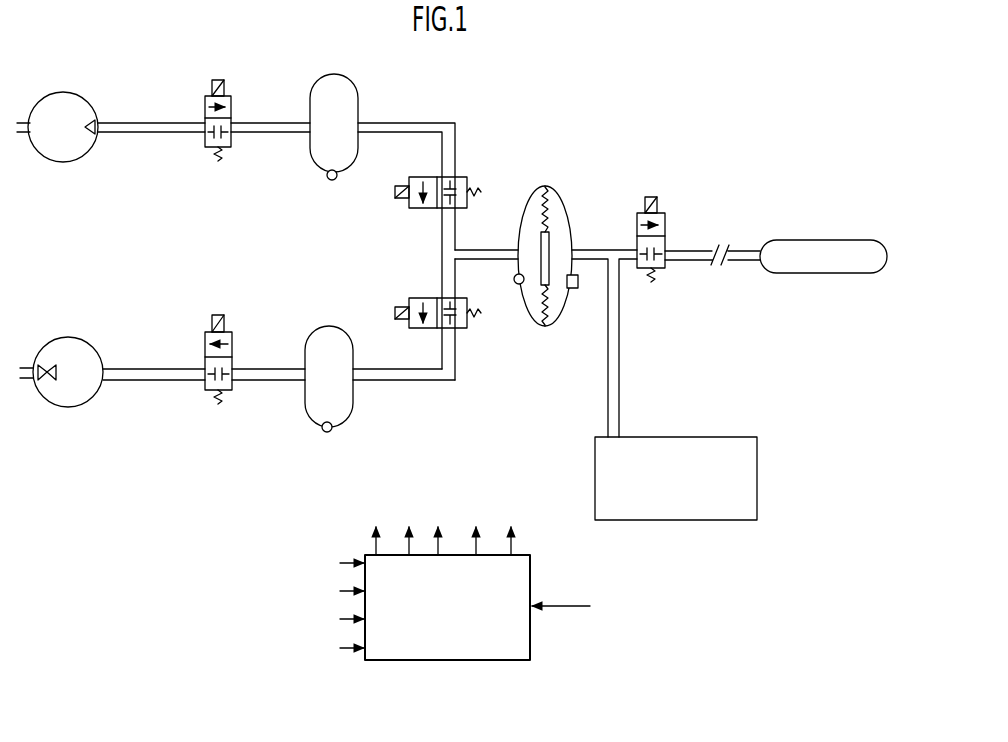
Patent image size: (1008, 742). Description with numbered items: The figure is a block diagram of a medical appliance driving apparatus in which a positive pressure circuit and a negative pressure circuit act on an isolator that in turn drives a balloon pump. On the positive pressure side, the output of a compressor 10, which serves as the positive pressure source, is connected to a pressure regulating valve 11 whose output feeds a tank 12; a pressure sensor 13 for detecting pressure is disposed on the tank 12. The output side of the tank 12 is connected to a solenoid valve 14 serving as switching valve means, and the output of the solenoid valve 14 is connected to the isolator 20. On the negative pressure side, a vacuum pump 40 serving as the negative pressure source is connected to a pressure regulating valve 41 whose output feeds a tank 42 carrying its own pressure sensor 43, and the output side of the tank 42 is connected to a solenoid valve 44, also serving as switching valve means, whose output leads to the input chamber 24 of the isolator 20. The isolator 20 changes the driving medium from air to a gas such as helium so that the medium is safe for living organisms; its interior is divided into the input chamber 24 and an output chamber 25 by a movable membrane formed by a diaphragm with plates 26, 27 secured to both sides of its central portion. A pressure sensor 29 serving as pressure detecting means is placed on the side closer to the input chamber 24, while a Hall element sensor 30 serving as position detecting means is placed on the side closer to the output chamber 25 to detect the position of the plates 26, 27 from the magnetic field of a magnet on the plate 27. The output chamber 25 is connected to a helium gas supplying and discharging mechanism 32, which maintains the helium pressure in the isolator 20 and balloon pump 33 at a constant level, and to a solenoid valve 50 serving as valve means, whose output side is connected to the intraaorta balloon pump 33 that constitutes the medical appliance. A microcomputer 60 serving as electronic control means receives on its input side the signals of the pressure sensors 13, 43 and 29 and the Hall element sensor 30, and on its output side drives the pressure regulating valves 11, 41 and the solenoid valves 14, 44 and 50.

The compressor 10 is at (80, 95).
The pressure regulating valve 11 is at (232, 104).
The tank 12 is at (358, 99).
The pressure sensor 13 is at (328, 179).
The solenoid valve 14 is at (466, 178).
The isolator 20 is at (545, 250).
The input chamber 24 is at (530, 222).
The output chamber 25 is at (558, 216).
The plate 26 is at (570, 291).
The plate 27 is at (548, 278).
The pressure sensor 29 is at (514, 282).
The Hall element sensor 30 is at (578, 282).
The helium gas supplying and discharging mechanism 32 is at (710, 437).
The intraaorta balloon pump 33 is at (792, 240).
The vacuum pump 40 is at (90, 347).
The pressure regulating valve 41 is at (205, 390).
The tank 42 is at (353, 405).
The pressure sensor 43 is at (328, 432).
The solenoid valve 44 is at (462, 328).
The solenoid valve 50 is at (637, 240).
The microcomputer 60 is at (530, 556).